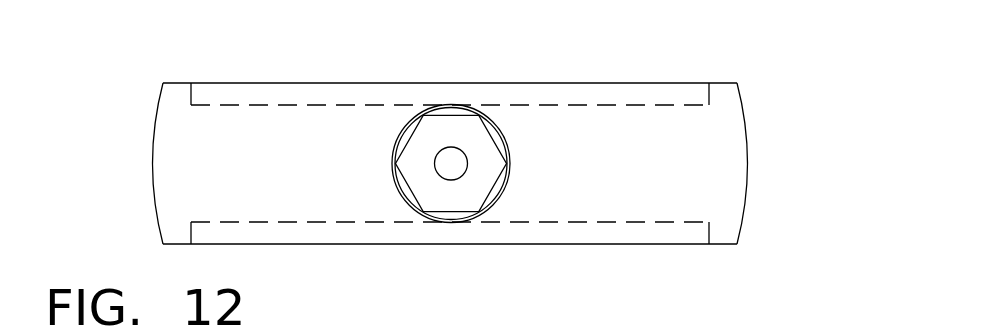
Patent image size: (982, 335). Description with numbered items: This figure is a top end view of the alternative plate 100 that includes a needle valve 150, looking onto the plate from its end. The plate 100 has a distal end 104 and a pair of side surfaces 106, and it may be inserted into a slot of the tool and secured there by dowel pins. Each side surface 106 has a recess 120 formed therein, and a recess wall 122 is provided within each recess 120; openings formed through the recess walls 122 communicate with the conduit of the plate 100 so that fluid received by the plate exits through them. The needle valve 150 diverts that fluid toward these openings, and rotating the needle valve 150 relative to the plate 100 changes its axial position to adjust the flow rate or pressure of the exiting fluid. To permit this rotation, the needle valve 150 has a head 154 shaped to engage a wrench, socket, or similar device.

The plate 100 is at (733, 54).
The distal end 104 is at (285, 169).
The side surfaces 106 is at (178, 82).
The recess 120 is at (575, 91).
The recess wall 122 is at (307, 103).
The needle valve 150 is at (517, 146).
The head 154 is at (461, 123).